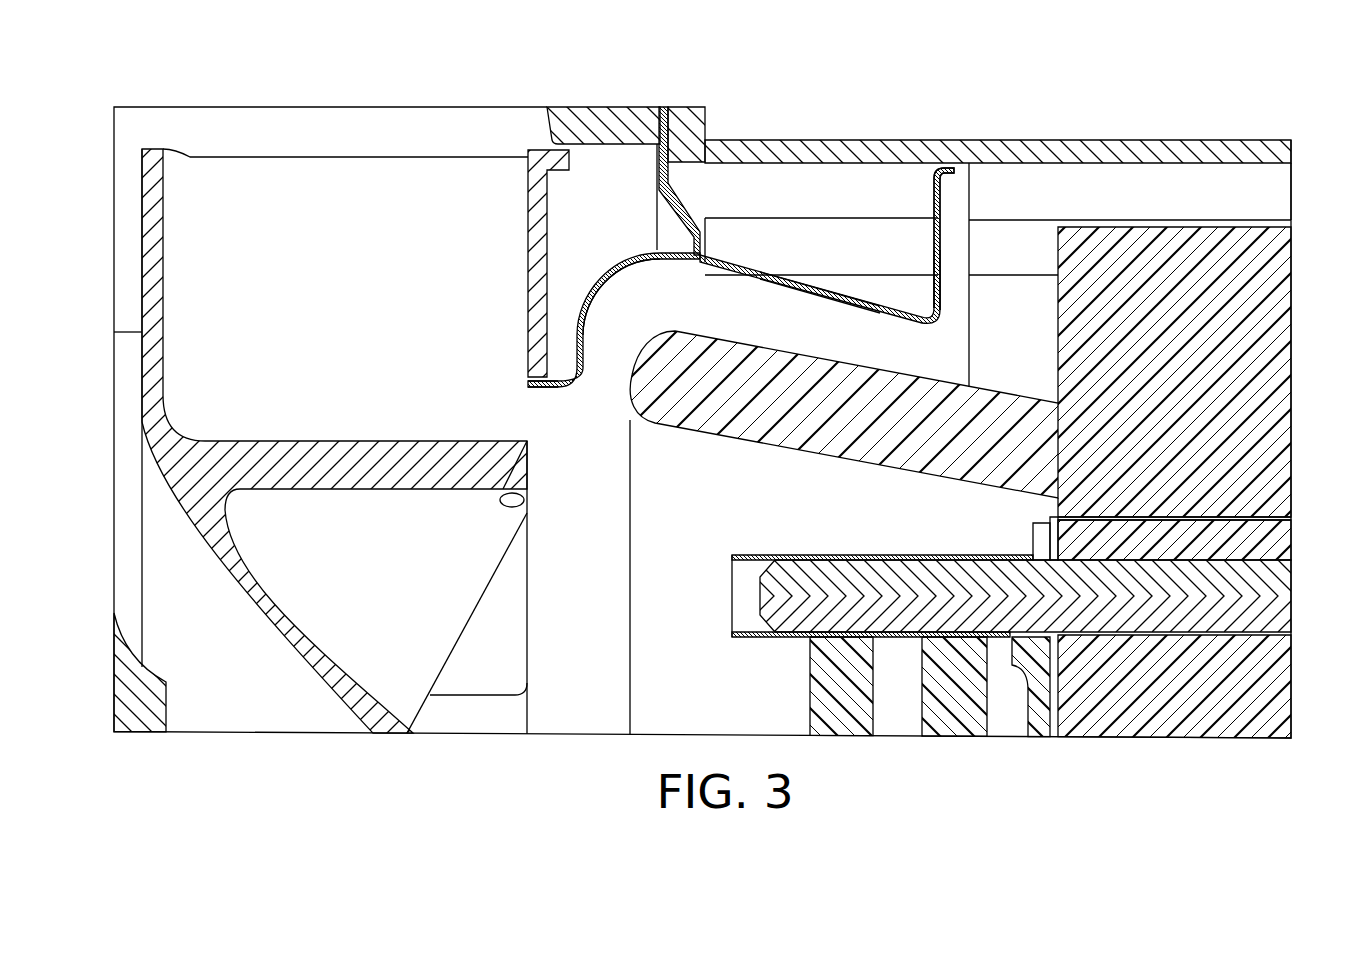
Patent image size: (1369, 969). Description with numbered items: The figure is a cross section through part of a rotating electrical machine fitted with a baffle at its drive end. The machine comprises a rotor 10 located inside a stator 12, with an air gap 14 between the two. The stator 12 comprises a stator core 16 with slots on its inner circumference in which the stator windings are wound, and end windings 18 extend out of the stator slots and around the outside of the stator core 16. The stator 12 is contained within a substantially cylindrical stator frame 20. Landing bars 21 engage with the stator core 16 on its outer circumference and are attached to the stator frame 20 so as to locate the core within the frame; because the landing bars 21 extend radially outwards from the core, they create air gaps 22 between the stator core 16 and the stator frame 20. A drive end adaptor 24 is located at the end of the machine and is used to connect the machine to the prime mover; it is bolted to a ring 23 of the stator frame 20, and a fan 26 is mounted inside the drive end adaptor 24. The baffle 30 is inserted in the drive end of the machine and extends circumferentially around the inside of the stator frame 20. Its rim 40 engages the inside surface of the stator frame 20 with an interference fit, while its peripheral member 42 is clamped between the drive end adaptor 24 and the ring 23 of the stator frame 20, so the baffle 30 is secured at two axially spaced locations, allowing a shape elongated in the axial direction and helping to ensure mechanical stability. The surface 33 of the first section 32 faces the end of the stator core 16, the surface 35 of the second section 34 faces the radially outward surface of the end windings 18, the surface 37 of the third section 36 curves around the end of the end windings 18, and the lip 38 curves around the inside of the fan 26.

The rotor 10 is at (1291, 692).
The stator 12 is at (1291, 322).
The air gap 14 is at (1291, 518).
The stator core 16 is at (1291, 418).
The end windings 18 is at (695, 427).
The stator frame 20 is at (1168, 140).
The landing bars 21 is at (900, 232).
The air gaps 22 is at (1291, 195).
The ring 23 is at (700, 112).
The drive end adaptor 24 is at (598, 122).
The fan 26 is at (320, 175).
The baffle 30 is at (750, 258).
The first section 32 is at (948, 245).
The surface 33 is at (948, 292).
The second section 34 is at (815, 290).
The surface 35 is at (800, 312).
The third section 36 is at (632, 255).
The surface 37 is at (606, 290).
The lip 38 is at (531, 375).
The rim 40 is at (955, 165).
The peripheral member 42 is at (666, 107).